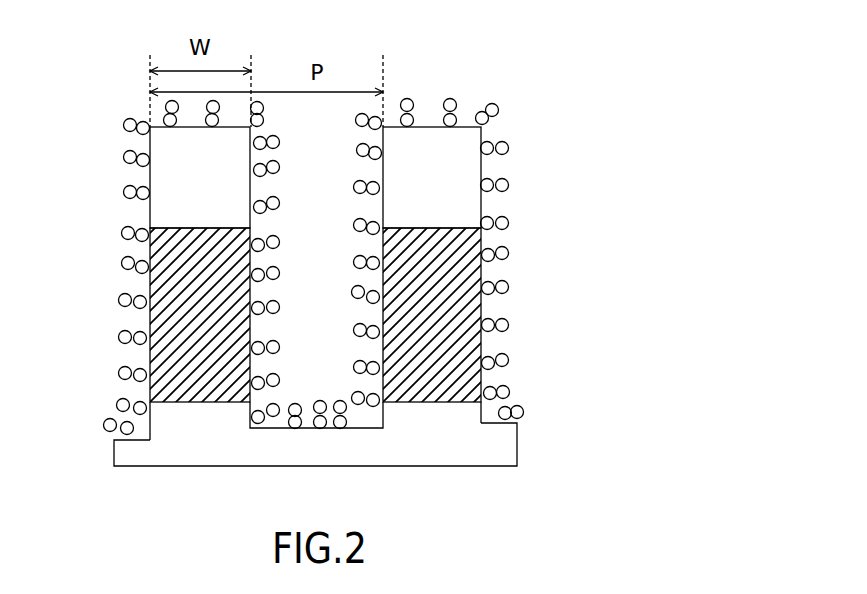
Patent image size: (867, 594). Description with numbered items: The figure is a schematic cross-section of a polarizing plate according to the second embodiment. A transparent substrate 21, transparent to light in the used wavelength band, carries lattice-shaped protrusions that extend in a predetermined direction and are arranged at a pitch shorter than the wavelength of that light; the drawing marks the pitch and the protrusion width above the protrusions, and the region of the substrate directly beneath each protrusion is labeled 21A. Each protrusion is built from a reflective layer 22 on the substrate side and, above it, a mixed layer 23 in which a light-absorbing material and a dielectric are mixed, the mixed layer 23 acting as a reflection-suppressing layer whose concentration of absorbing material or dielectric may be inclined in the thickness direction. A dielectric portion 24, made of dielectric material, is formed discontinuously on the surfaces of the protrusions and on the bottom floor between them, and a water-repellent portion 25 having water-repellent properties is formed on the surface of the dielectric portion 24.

The transparent substrate 21 is at (518, 442).
The protruding portion of substrate 21A is at (487, 422).
The reflective layer 22 is at (481, 305).
The mixed layer 23 is at (481, 203).
The dielectric portion 24 is at (481, 122).
The water-repellent portion 25 is at (492, 106).